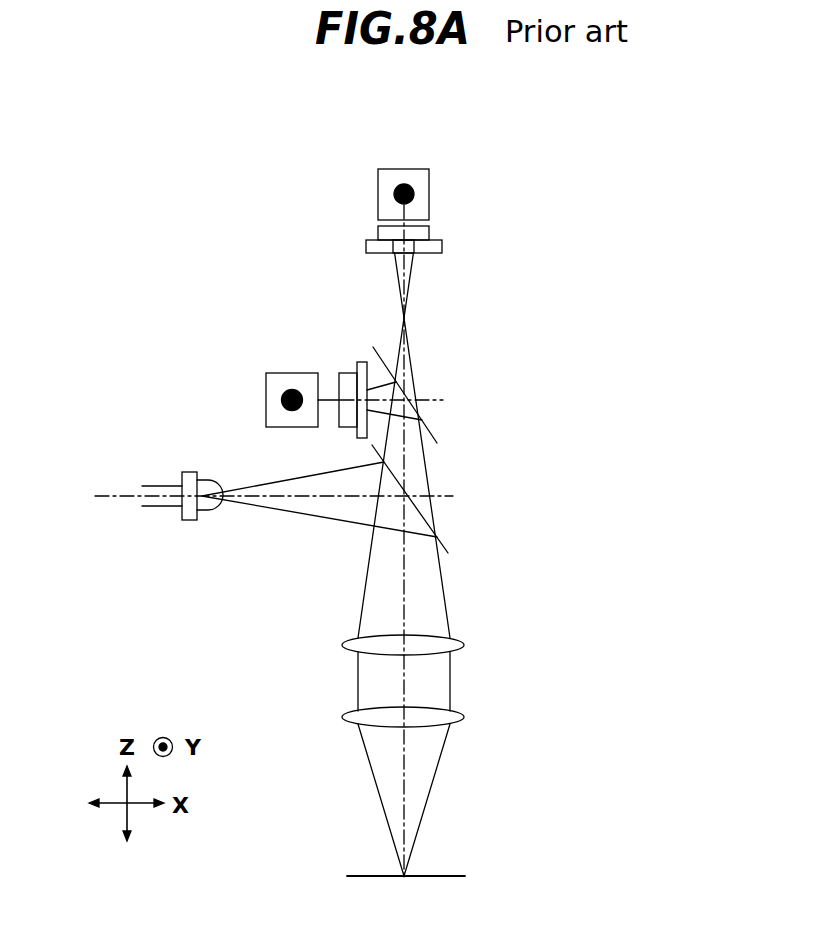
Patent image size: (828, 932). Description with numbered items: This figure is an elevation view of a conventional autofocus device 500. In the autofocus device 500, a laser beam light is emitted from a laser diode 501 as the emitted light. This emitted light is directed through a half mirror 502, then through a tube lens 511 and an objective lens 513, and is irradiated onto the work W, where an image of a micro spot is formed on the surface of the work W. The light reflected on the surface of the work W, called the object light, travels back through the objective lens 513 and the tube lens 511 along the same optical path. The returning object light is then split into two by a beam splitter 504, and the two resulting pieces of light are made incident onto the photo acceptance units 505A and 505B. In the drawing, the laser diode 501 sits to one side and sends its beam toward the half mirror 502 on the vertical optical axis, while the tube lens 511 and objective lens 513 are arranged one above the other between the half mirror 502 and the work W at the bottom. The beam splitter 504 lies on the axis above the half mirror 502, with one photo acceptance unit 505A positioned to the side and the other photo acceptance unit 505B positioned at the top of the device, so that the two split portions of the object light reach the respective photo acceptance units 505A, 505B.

The autofocus device 500 is at (420, 104).
The photo acceptance unit 505B is at (338, 216).
The photo acceptance unit 505A is at (295, 372).
The beam splitter 504 is at (432, 433).
The half mirror 502 is at (443, 540).
The laser diode 501 is at (187, 472).
The tube lens 511 is at (458, 642).
The objective lens 513 is at (458, 710).
The work W is at (355, 876).